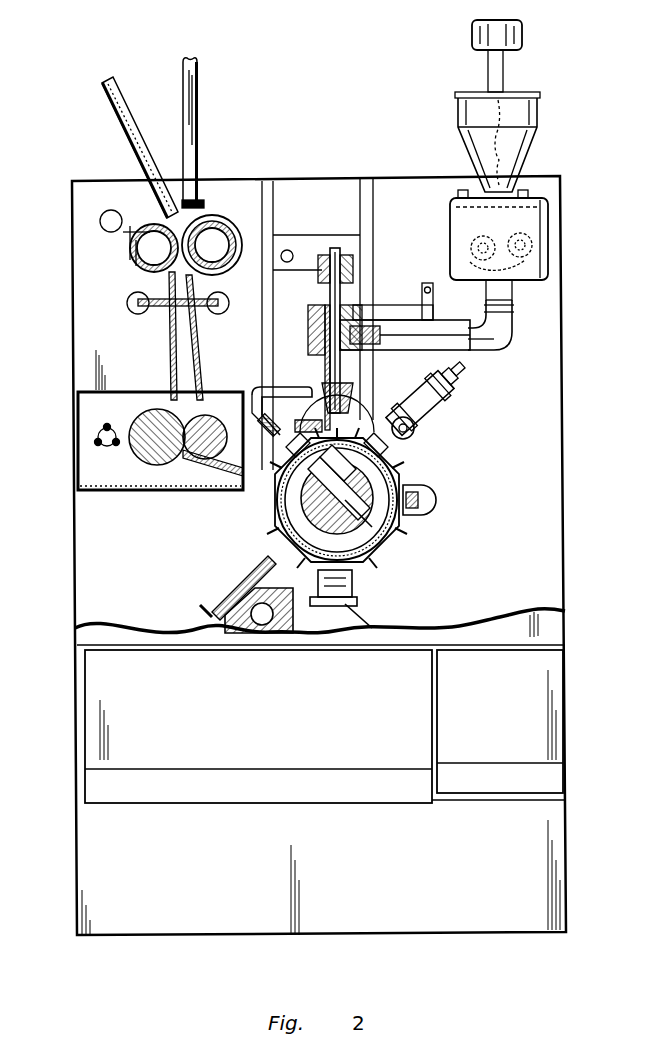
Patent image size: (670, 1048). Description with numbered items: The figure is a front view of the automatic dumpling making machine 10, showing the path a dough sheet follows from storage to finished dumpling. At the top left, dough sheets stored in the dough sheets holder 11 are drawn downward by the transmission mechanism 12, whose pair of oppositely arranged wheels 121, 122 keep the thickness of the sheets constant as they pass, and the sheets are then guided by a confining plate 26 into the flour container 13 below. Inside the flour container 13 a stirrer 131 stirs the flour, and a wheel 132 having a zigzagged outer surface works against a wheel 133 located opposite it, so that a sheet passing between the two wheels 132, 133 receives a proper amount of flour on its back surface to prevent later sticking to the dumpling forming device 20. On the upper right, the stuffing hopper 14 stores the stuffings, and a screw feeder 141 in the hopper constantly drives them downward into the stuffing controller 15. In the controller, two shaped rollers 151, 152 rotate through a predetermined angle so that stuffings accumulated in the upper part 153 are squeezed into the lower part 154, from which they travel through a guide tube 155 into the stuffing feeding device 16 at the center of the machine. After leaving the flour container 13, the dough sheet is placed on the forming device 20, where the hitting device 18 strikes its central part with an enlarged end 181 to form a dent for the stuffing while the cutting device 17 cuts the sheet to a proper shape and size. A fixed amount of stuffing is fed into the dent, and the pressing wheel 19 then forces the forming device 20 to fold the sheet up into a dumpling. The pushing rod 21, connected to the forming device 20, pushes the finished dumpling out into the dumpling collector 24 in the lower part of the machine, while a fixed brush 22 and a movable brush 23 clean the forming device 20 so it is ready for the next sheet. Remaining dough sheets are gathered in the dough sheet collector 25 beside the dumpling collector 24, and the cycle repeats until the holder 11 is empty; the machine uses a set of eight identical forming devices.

The automatic dumpling making machine 10 is at (293, 176).
The dough sheets holder 11 is at (108, 78).
The transmission mechanism 12 is at (128, 243).
The wheel 121 is at (144, 262).
The wheel 122 is at (206, 230).
The confining plate 26 is at (170, 340).
The flour container 13 is at (98, 460).
The stirrer 131 is at (97, 433).
The wheel having a zigzagged outer surface 132 is at (140, 450).
The wheel 133 is at (205, 458).
The stuffing hopper 14 is at (530, 151).
The screw feeder 141 is at (505, 143).
The stuffing controller 15 is at (550, 240).
The roller 151 is at (525, 257).
The roller 152 is at (500, 265).
The upper part 153 is at (540, 216).
The lower part 154 is at (548, 255).
The guide tube 155 is at (500, 342).
The stuffing feeding device 16 is at (350, 362).
The cutting device 17 is at (320, 392).
The hitting device 18 is at (275, 462).
The enlarged end 181 is at (288, 458).
The pressing wheel 19 is at (418, 436).
The dumpling forming device 20 is at (422, 501).
The pushing rod 21 is at (392, 532).
The fixed brush 22 is at (357, 600).
The movable brush 23 is at (222, 606).
The dumpling collector 24 is at (95, 784).
The dough sheet collector 25 is at (540, 776).